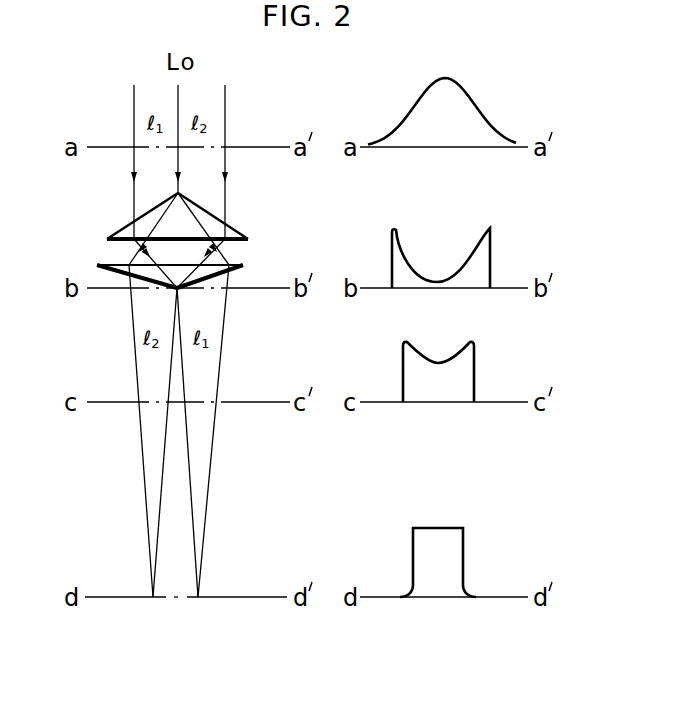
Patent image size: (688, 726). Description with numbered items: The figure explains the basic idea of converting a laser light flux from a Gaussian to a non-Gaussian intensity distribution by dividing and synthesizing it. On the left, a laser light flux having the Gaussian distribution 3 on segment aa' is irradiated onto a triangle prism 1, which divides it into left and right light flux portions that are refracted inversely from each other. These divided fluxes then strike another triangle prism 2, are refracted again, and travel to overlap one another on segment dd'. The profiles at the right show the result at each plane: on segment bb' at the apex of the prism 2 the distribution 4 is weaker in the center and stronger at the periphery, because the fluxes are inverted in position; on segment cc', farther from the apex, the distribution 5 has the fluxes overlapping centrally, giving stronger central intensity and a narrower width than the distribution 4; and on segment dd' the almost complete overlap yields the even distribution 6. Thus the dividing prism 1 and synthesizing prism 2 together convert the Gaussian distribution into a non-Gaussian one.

The triangle prism 1 is at (230, 232).
The triangle prism 2 is at (243, 265).
The Gaussian distribution 3 is at (473, 103).
The light intensity distribution on segment bb' 4 is at (468, 253).
The light intensity distribution on segment cc' 5 is at (455, 357).
The even light intensity distribution 6 is at (440, 528).